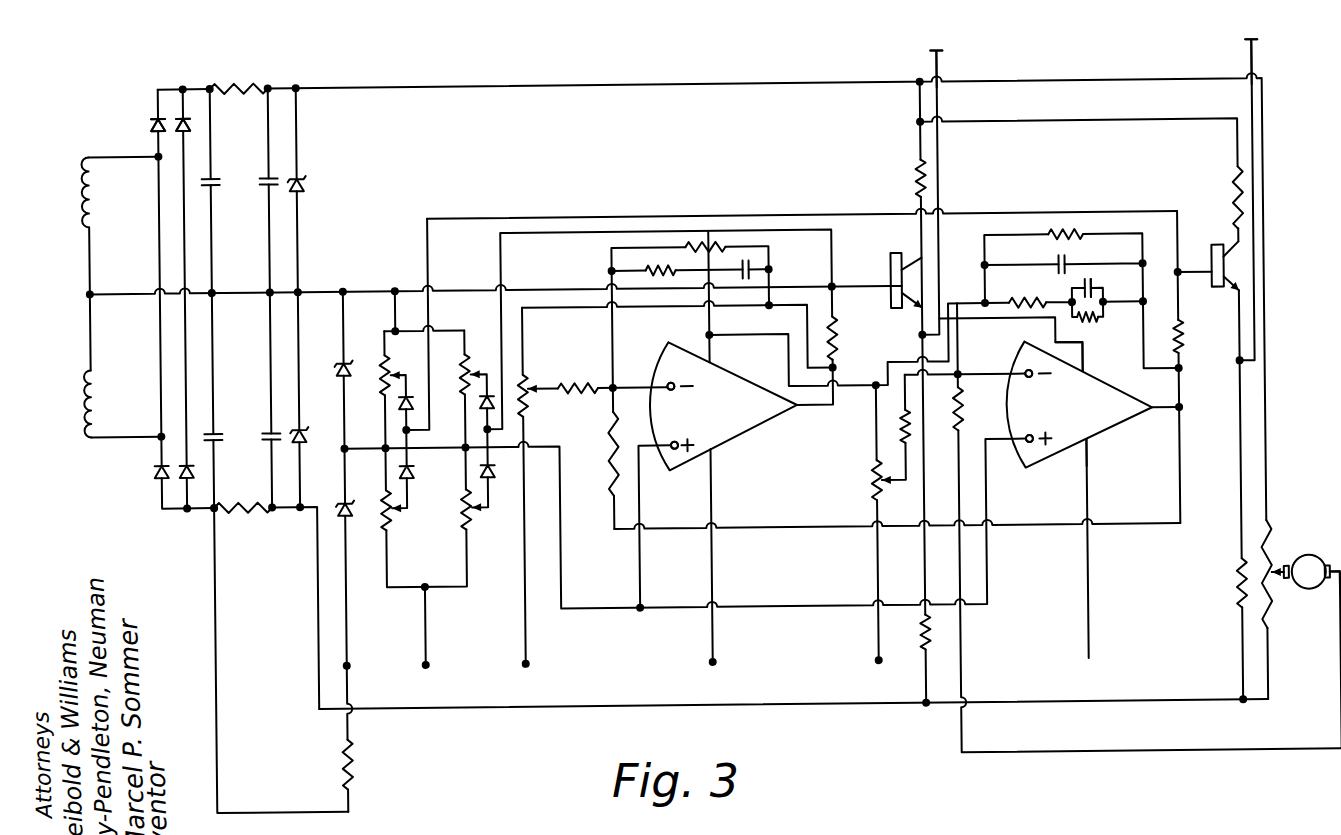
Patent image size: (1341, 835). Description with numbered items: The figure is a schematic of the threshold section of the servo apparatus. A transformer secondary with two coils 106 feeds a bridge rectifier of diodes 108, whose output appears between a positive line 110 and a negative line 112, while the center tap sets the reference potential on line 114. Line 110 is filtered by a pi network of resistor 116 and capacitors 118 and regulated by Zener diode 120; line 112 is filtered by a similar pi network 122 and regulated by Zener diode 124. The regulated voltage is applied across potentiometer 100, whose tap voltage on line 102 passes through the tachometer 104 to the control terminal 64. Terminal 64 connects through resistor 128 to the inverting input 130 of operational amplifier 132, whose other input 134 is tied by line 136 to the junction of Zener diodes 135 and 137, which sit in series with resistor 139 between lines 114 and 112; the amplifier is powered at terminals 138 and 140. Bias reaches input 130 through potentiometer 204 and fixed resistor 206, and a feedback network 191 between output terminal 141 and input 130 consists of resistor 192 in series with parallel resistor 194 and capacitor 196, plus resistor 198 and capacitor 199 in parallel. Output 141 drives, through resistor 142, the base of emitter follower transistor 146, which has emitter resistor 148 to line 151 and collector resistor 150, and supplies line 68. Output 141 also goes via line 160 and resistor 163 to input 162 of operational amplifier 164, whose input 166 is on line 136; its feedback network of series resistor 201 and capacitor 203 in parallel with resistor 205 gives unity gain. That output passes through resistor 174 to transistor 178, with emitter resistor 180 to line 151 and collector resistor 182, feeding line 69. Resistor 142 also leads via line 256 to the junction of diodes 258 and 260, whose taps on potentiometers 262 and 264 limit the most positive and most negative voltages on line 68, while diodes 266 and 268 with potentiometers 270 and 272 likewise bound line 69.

The control terminal 64 is at (1334, 585).
The line 68 is at (1262, 66).
The line 69 is at (946, 65).
The potentiometer 100 is at (1272, 618).
The line 102 is at (1278, 575).
The tachometer 104 is at (1312, 560).
The coils 106 is at (98, 402).
The diodes 108 is at (184, 475).
The line 110 is at (187, 73).
The line 112 is at (213, 527).
The line 114 is at (113, 288).
The resistor 116 is at (238, 72).
The capacitors 118 is at (267, 186).
The Zener diode 120 is at (307, 187).
The pi network 122 is at (262, 422).
The Zener diode 124 is at (305, 430).
The resistor 128 is at (968, 418).
The input 130 is at (1013, 378).
The operational amplifier 132 is at (1085, 428).
The input 134 is at (1010, 458).
The Zener diode 135 is at (340, 366).
The line 136 is at (990, 607).
The Zener diode 137 is at (340, 506).
The terminal 138 is at (1088, 378).
The resistor 139 is at (352, 770).
The terminal 140 is at (1090, 448).
The output terminal 141 is at (1152, 414).
The resistor 142 is at (1174, 338).
The transistor 146 is at (1213, 250).
The resistor 148 is at (1237, 610).
The resistor 150 is at (1236, 202).
The line 151 is at (1104, 705).
The line 160 is at (806, 528).
The input 162 is at (660, 385).
The resistor 163 is at (609, 450).
The operational amplifier 164 is at (755, 420).
The input 166 is at (672, 475).
The resistor 174 is at (830, 316).
The transistor 178 is at (896, 255).
The resistor 180 is at (920, 635).
The resistor 182 is at (918, 182).
The feedback network 191 is at (1070, 286).
The resistor 192 is at (1024, 304).
The resistor 194 is at (1084, 326).
The capacitor 196 is at (1094, 292).
The resistor 198 is at (1072, 238).
The capacitor 199 is at (1068, 266).
The resistor 201 is at (656, 265).
The capacitor 203 is at (750, 268).
The potentiometer 204 is at (870, 482).
The resistor 205 is at (728, 247).
The fixed resistor 206 is at (900, 422).
The line 256 is at (448, 216).
The diode 258 is at (408, 394).
The diode 260 is at (410, 480).
The potentiometer 262 is at (383, 352).
The potentiometer 264 is at (388, 528).
The diode 266 is at (484, 402).
The diode 268 is at (482, 468).
The potentiometer 270 is at (465, 352).
The potentiometer 272 is at (472, 506).